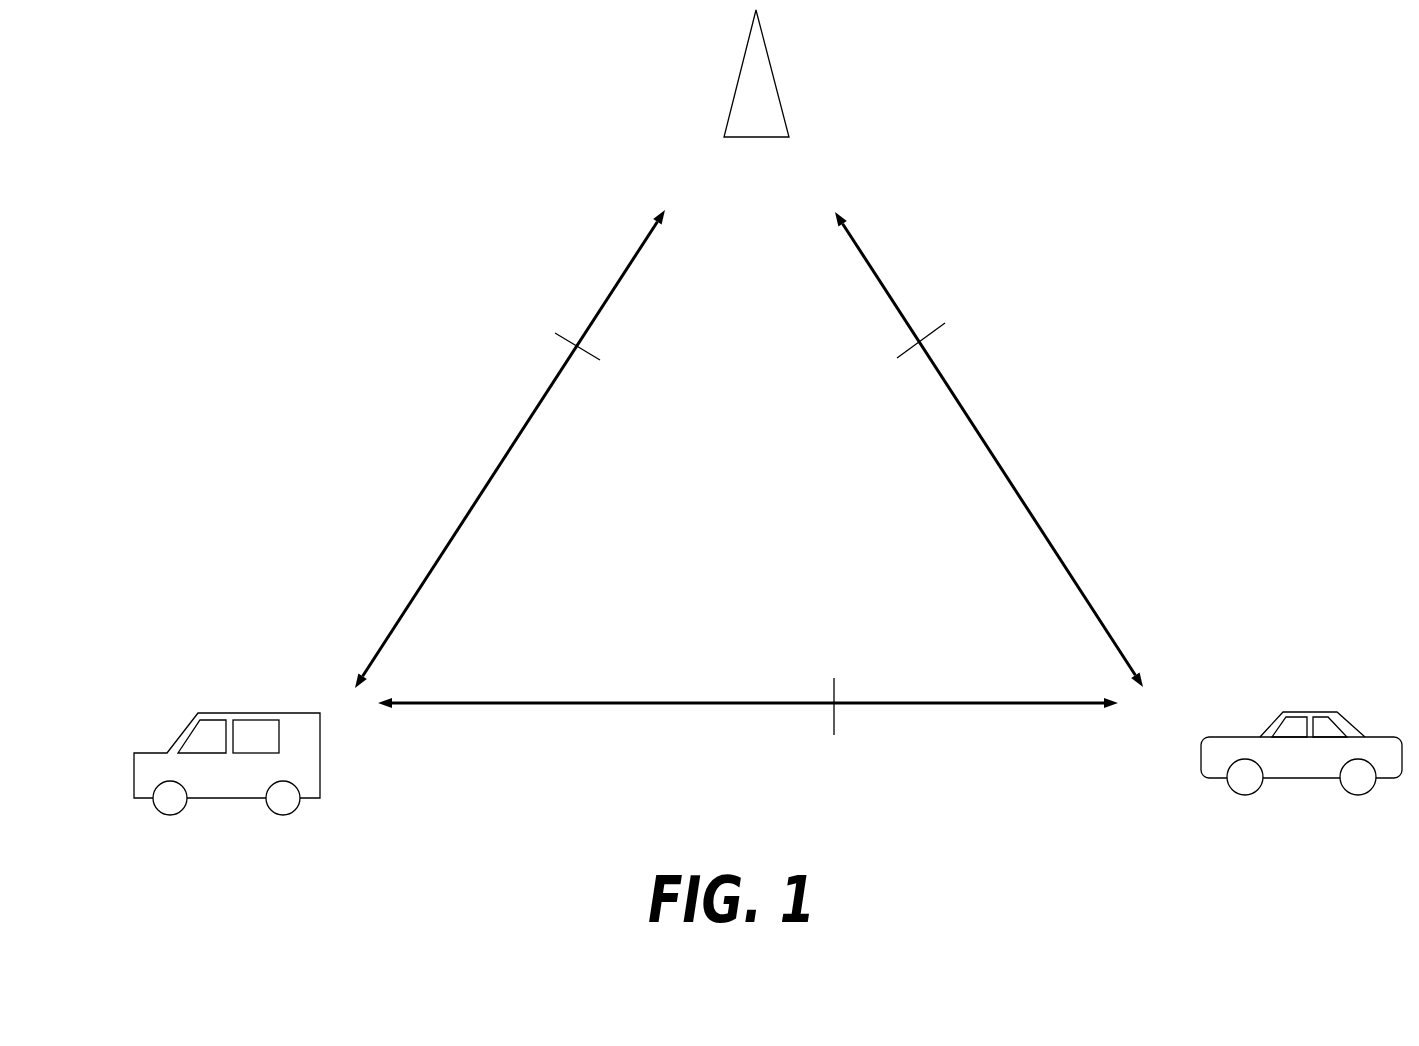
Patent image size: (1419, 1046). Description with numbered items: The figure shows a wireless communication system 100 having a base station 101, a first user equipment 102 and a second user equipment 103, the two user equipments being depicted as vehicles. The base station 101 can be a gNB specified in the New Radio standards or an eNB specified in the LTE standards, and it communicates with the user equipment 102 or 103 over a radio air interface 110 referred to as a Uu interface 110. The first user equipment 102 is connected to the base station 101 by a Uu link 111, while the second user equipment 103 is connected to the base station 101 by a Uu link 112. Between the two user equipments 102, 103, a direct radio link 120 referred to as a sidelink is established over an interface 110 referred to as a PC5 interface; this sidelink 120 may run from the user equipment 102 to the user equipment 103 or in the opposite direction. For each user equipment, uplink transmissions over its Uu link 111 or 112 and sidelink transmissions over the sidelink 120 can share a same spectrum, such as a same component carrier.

The wireless communication system 100 is at (1190, 97).
The base station 101 is at (775, 78).
The first user equipment 102 is at (238, 787).
The second user equipment 103 is at (1313, 763).
The interface 110 is at (590, 357).
The Uu link 111 is at (482, 500).
The Uu link 112 is at (1017, 497).
The sidelink 120 is at (675, 700).